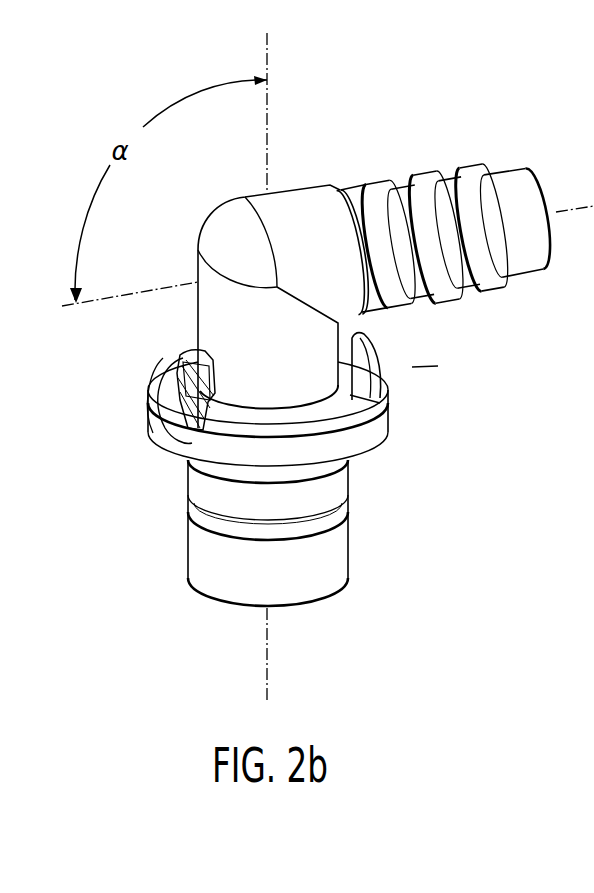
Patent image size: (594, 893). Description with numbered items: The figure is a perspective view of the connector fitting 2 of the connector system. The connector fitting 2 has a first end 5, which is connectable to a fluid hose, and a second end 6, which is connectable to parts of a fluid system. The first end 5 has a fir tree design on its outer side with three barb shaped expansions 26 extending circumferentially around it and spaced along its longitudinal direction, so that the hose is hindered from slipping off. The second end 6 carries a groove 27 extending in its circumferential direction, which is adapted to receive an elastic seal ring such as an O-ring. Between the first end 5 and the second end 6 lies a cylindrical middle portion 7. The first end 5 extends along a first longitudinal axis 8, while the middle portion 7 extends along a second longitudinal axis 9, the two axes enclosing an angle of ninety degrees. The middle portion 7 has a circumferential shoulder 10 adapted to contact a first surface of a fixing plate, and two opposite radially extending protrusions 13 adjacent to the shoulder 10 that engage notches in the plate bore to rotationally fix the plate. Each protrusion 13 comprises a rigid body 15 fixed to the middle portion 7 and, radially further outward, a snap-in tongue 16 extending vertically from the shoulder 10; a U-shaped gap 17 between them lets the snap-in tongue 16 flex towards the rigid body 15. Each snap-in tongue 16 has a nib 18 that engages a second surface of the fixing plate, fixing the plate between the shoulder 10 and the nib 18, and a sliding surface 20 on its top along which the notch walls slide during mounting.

The connector fitting 2 is at (222, 303).
The first end 5 is at (447, 191).
The second end 6 is at (262, 533).
The cylindrical middle portion 7 is at (412, 367).
The first longitudinal axis 8 is at (584, 205).
The second longitudinal axis 9 is at (267, 690).
The shoulder 10 is at (265, 425).
The radially extending protrusions 13 is at (190, 380).
The rigid body 15 is at (175, 448).
The snap-in tongue 16 is at (160, 426).
The U-shaped gap 17 is at (170, 346).
The nib 18 is at (265, 361).
The sliding surface 20 is at (165, 378).
The barb shaped expansions 26 is at (480, 175).
The groove 27 is at (352, 524).